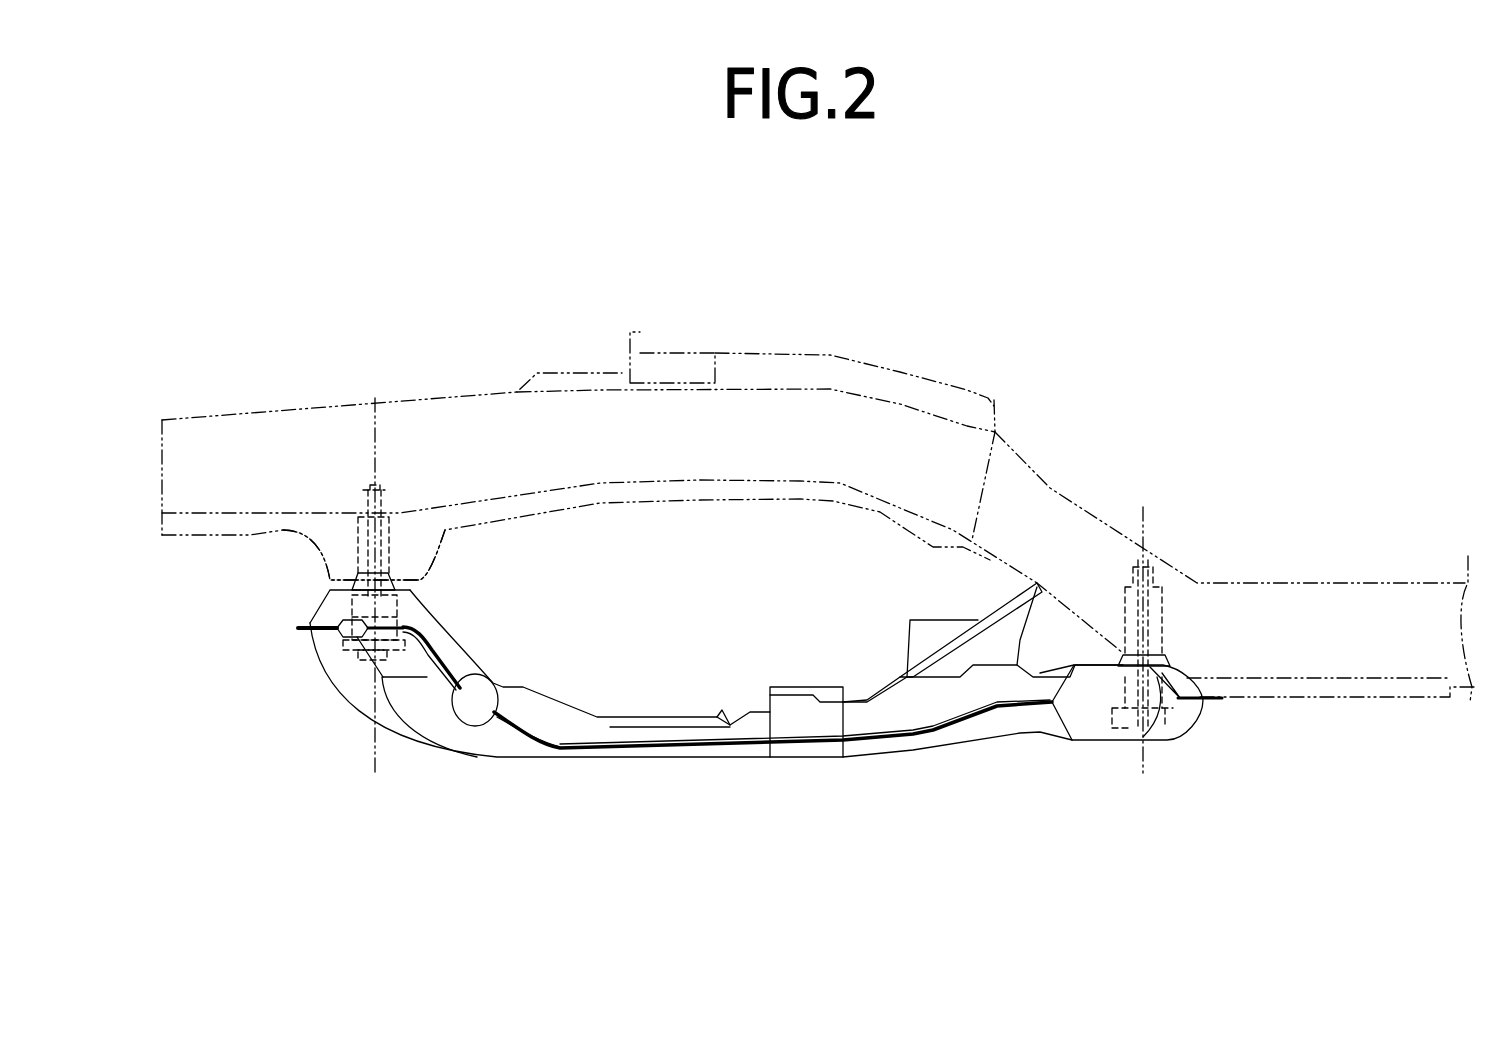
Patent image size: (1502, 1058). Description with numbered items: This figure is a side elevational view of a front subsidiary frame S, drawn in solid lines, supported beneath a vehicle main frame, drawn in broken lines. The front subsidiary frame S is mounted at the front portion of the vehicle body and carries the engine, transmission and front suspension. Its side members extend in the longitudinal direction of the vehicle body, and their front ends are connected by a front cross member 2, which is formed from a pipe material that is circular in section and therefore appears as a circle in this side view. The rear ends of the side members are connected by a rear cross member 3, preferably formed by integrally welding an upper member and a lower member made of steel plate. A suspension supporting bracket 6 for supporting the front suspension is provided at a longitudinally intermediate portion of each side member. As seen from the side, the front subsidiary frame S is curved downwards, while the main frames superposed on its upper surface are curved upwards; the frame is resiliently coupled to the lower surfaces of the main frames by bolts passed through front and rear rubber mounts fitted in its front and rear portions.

The rear cross member 3 is at (776, 283).
The front subsidiary frame S is at (693, 757).
The front cross member 2 is at (481, 693).
The suspension supporting bracket 6 is at (813, 685).